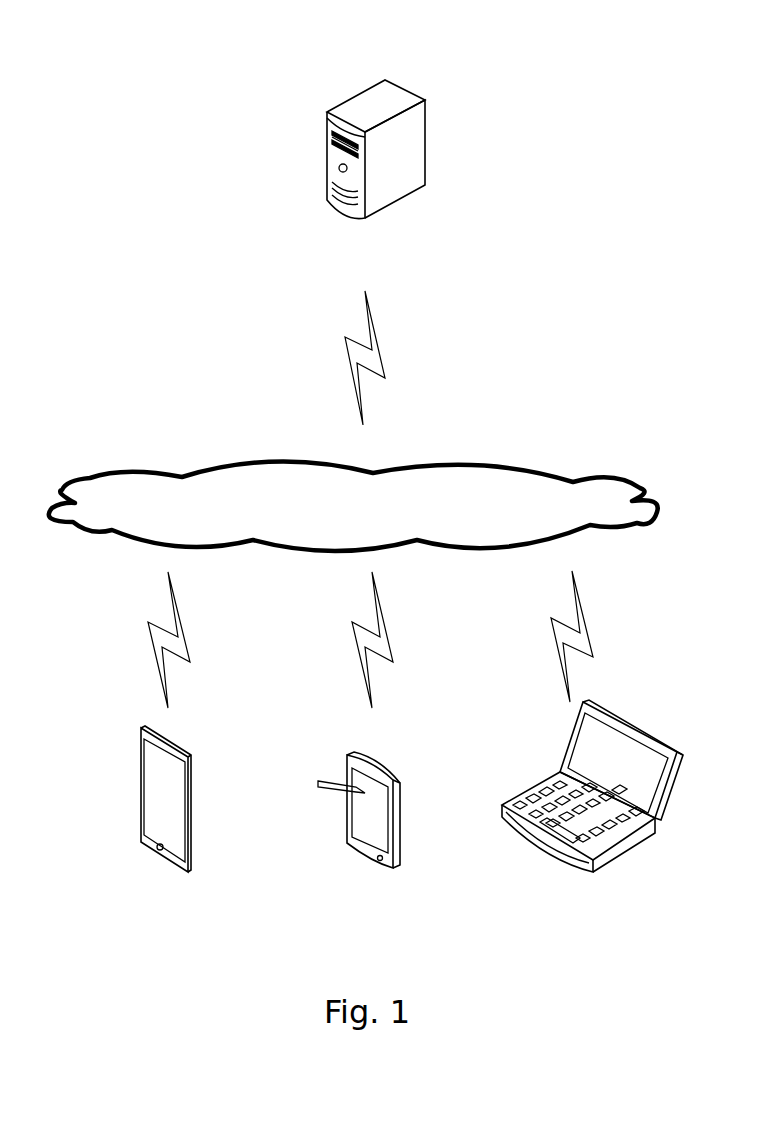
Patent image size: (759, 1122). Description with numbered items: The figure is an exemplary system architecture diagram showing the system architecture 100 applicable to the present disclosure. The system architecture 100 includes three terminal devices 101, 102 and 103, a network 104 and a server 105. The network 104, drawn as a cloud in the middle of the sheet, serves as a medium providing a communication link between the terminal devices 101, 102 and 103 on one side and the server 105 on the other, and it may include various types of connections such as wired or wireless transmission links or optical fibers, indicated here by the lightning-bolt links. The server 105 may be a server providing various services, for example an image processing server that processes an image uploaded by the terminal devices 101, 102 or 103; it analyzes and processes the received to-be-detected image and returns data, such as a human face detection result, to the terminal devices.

The system architecture 100 is at (538, 47).
The terminal device 101 is at (592, 807).
The terminal device 102 is at (359, 831).
The terminal device 103 is at (166, 818).
The network 104 is at (353, 499).
The server 105 is at (376, 172).